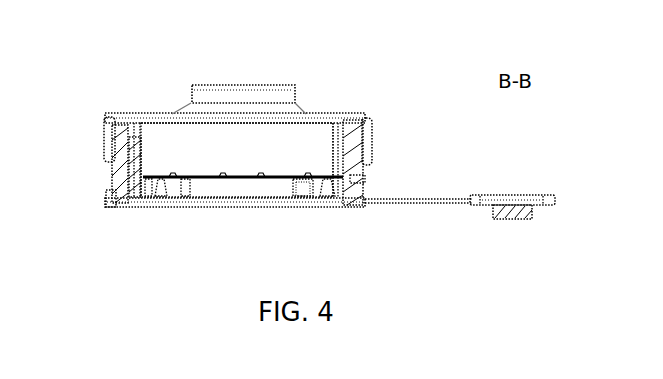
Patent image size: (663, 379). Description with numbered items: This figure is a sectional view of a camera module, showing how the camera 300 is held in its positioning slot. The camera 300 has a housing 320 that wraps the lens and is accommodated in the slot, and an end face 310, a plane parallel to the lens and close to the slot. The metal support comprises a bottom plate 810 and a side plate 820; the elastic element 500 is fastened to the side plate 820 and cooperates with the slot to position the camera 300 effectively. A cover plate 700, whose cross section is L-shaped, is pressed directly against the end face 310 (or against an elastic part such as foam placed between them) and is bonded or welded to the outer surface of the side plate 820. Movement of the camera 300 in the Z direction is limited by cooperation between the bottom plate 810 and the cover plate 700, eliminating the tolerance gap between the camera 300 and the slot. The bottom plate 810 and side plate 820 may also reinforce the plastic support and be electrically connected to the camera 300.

The camera 300 is at (265, 86).
The end face 310 is at (182, 112).
The housing 320 is at (140, 142).
The elastic element 500 is at (115, 124).
The cover plate 700 is at (105, 126).
The bottom plate 810 is at (122, 194).
The side plate 820 is at (114, 200).